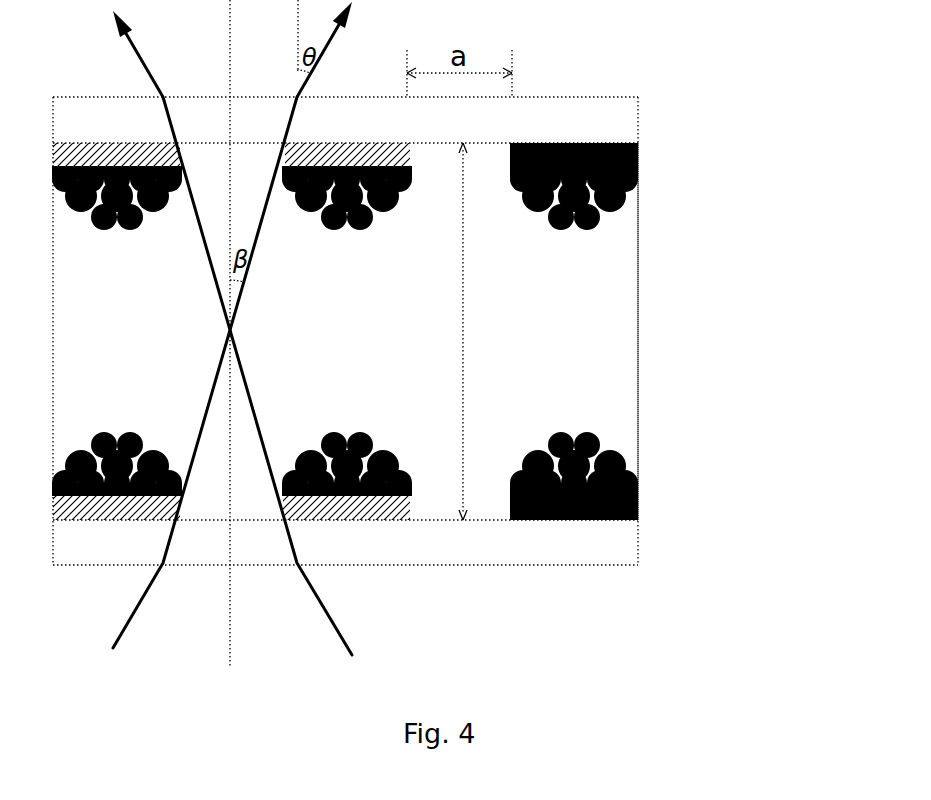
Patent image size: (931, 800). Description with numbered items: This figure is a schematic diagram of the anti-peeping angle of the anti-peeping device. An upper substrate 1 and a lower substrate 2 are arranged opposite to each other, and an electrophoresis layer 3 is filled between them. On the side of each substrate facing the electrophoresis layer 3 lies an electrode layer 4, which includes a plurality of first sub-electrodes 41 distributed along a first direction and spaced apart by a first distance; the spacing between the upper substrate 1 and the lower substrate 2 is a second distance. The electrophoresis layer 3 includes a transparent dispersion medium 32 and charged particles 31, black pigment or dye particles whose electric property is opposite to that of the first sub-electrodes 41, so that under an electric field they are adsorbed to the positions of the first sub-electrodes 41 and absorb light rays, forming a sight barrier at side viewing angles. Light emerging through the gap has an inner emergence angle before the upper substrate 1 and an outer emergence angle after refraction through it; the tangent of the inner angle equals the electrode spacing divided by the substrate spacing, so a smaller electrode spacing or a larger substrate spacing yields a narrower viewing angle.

The upper substrate 1 is at (608, 113).
The lower substrate 2 is at (595, 547).
The electrophoresis layer 3 is at (752, 187).
The charged particles 31 is at (620, 202).
The transparent dispersion medium 32 is at (600, 335).
The electrode layer 4 is at (414, 331).
The first sub-electrodes 41 is at (638, 150).